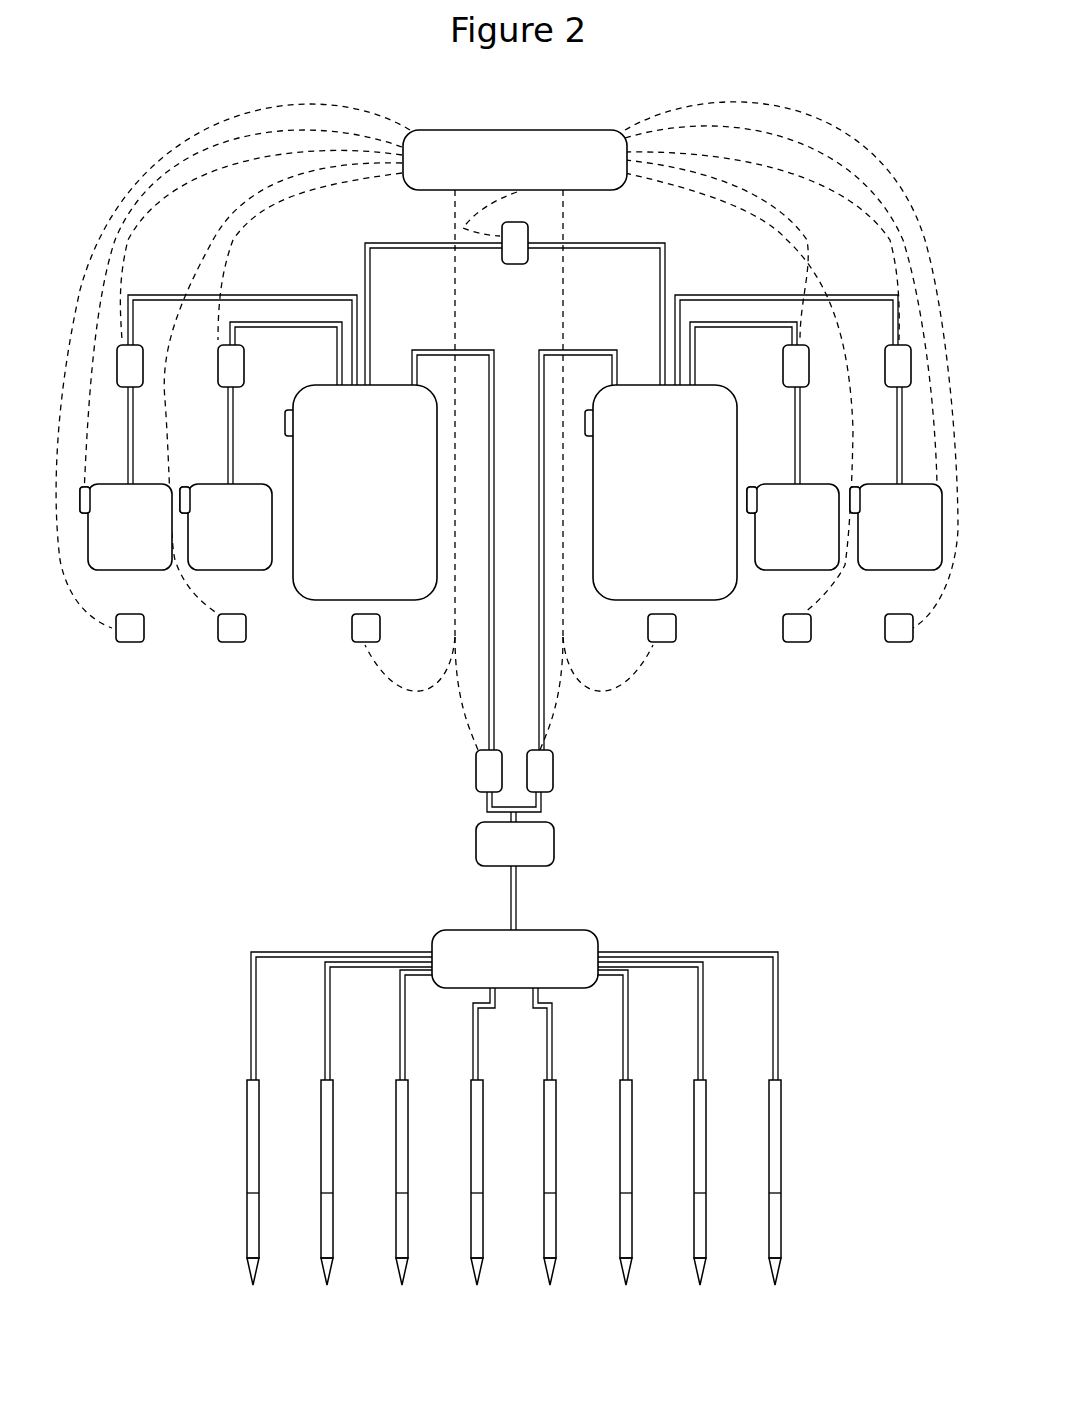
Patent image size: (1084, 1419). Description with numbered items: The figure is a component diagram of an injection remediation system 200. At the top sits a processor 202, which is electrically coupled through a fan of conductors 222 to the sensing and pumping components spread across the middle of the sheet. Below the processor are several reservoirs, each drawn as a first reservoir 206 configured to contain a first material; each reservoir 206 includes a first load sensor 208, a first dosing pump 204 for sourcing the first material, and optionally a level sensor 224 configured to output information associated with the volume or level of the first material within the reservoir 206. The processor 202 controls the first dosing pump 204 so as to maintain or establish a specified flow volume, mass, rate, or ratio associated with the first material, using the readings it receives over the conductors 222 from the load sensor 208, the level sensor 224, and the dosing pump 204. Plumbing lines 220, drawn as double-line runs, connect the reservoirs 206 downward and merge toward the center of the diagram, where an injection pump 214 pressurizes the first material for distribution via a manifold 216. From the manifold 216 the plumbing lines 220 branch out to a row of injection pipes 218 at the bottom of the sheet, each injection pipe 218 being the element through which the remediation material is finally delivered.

The injection remediation system 200 is at (868, 65).
The processor 202 is at (540, 130).
The first dosing pump 204 is at (122, 372).
The first reservoir 206 is at (140, 550).
The first load sensor 208 is at (130, 633).
The injection pump 214 is at (540, 848).
The manifold 216 is at (570, 950).
The injection pipe 218 is at (773, 1193).
The plumbing lines 220 is at (364, 268).
The conductors 222 is at (325, 93).
The level sensor 224 is at (84, 513).